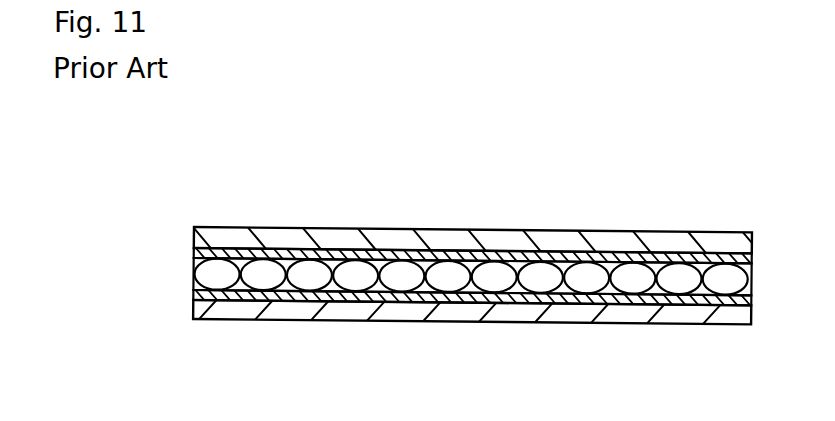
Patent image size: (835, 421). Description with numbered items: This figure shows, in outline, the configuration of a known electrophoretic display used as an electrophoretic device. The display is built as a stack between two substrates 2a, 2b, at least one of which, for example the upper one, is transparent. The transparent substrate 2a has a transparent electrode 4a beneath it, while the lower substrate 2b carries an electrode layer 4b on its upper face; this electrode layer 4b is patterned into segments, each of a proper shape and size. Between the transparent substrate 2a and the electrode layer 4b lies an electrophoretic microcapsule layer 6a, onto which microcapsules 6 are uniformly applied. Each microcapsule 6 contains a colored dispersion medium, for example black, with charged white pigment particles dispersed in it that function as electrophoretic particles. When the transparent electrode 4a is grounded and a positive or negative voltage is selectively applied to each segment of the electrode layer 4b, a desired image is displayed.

The transparent substrate 2a is at (693, 242).
The substrate 2b is at (654, 313).
The transparent electrode 4a is at (582, 255).
The electrode layer 4b is at (527, 303).
The microcapsule 6 is at (733, 277).
The electrophoretic microcapsule layer 6a is at (473, 276).